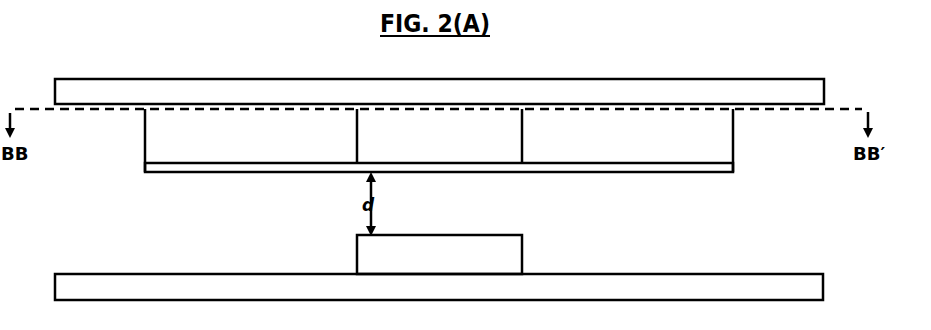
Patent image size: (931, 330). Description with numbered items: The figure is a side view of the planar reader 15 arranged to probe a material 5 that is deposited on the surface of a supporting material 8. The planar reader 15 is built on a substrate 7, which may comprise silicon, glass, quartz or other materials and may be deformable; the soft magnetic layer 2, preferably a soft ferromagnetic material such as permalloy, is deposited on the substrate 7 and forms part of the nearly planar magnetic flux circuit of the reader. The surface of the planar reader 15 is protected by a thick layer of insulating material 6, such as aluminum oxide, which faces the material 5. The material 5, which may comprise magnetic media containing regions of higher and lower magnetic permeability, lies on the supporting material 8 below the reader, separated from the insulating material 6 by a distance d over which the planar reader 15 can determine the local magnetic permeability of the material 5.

The substrate 7 is at (812, 98).
The soft magnetic layer 2 is at (146, 142).
The insulating material 6 is at (485, 165).
The material 5 is at (523, 258).
The supporting material 8 is at (812, 291).
The planar reader 15 is at (756, 168).